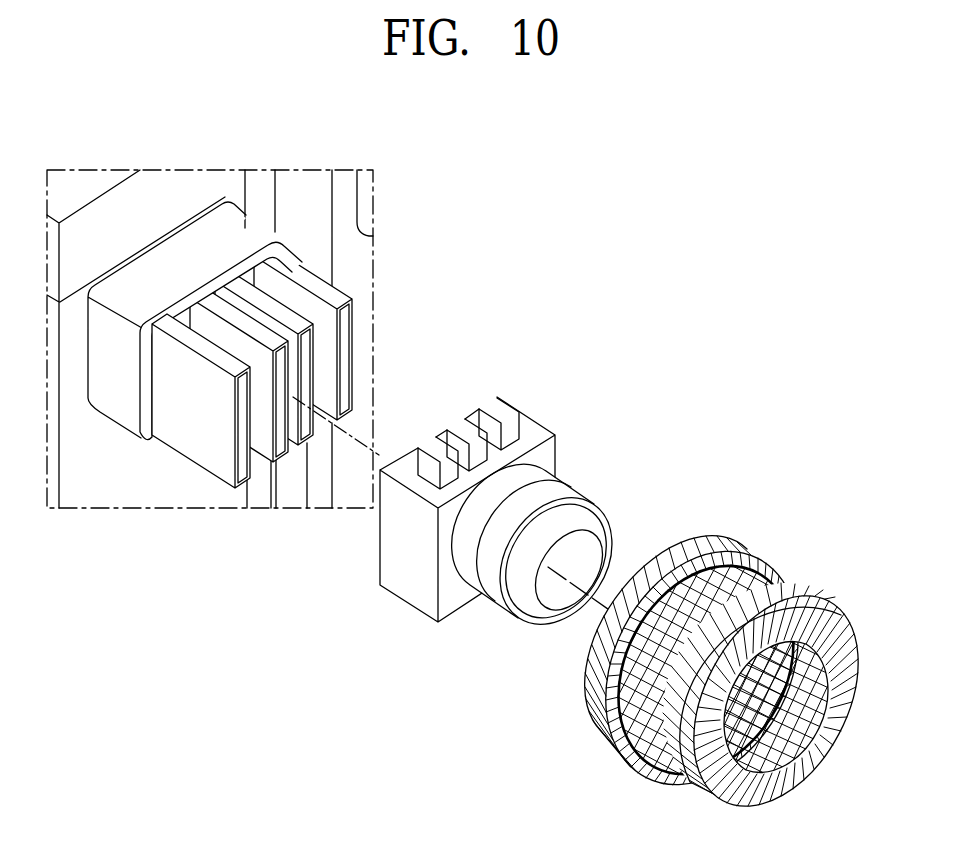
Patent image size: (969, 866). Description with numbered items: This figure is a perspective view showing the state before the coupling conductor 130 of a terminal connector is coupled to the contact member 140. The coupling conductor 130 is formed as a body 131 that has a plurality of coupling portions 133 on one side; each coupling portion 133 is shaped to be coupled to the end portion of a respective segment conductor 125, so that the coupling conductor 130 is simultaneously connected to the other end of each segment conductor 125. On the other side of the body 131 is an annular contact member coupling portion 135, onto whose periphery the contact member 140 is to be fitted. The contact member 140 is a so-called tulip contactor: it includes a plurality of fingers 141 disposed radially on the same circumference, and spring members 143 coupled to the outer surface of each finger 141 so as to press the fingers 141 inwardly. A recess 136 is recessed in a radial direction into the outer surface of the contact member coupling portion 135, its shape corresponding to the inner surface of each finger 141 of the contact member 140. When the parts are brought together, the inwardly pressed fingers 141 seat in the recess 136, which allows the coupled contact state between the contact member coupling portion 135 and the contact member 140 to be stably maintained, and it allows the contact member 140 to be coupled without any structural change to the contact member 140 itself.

The segment conductor 125 is at (317, 282).
The coupling conductor 130 is at (508, 465).
The body 131 is at (529, 465).
The coupling portion 133 is at (466, 433).
The contact member coupling portion 135 is at (556, 480).
The recess 136 is at (560, 500).
The contact member 140 is at (730, 621).
The finger 141 is at (772, 585).
The spring member 143 is at (727, 587).